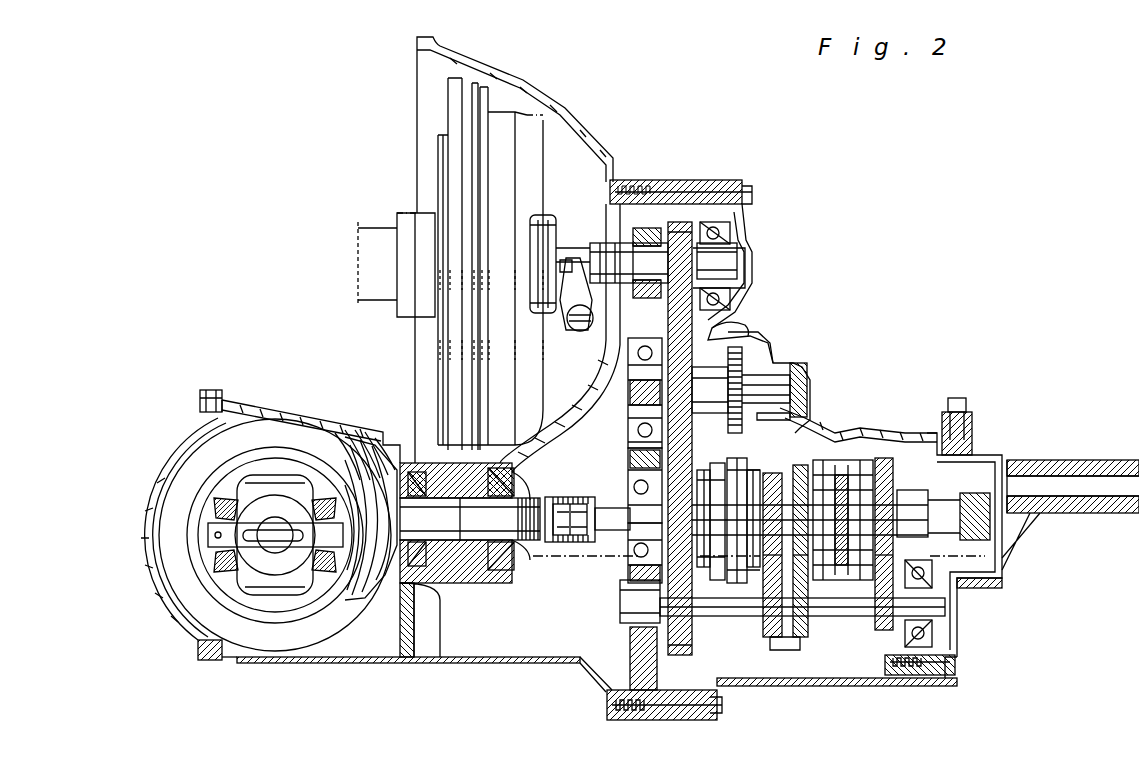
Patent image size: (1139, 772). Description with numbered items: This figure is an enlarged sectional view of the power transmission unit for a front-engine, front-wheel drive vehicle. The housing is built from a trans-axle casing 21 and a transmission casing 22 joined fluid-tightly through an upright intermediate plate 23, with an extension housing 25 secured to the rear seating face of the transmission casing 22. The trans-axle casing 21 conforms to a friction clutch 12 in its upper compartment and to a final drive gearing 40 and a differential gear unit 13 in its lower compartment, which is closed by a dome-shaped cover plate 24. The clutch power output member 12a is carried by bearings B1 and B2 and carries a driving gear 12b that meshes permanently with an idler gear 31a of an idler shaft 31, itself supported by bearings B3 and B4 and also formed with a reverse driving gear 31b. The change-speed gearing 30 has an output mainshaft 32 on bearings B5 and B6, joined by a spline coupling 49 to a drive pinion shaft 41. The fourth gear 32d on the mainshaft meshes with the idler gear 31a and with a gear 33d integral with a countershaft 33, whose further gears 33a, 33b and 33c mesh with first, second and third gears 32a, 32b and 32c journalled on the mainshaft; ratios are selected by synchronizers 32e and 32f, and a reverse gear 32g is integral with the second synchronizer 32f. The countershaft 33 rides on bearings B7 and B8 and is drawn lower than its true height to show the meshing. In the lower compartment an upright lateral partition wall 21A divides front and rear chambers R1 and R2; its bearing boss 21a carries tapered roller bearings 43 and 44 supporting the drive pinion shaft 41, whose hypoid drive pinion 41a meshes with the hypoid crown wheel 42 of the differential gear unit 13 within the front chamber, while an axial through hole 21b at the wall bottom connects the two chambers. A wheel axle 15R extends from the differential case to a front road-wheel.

The trans-axle casing 21 is at (478, 60).
The friction clutch 12 is at (455, 152).
The power output member 12a is at (717, 260).
The driving gear 12b is at (683, 227).
The bearing B1 is at (645, 184).
The bearing B2 is at (720, 236).
The idler shaft 31 is at (710, 377).
The idler gear 31a is at (687, 323).
The reverse driving gear 31b is at (742, 357).
The bearing B4 is at (800, 362).
The bearing B3 is at (636, 430).
The bearing B5 is at (632, 490).
The bearing B7 is at (627, 627).
The dome-shaped cover plate 24 is at (150, 505).
The differential gear unit 13 is at (233, 572).
The wheel axle 15R is at (275, 550).
The hypoid crown wheel 42 is at (362, 580).
The final drive gearing 40 is at (383, 438).
The hypoid drive pinion 41a is at (357, 437).
The tapered roller bearing 43 is at (428, 470).
The tapered roller bearing 44 is at (497, 462).
The drive pinion shaft 41 is at (497, 507).
The spline coupling 49 is at (567, 542).
The fourth gear 32d is at (714, 460).
The reverse gear 32g is at (733, 463).
The third gear 32c is at (767, 477).
The synchronizer 32f is at (725, 575).
The synchronizer 32e is at (845, 573).
The output mainshaft 32 is at (920, 503).
The first gear 32a is at (888, 460).
The second gear 32b is at (817, 457).
The change-speed gearing 30 is at (819, 432).
The countershaft 33 is at (957, 600).
The bearing B6 is at (932, 545).
The bearing B8 is at (940, 640).
The extension housing 25 is at (1060, 460).
The transmission casing 22 is at (868, 677).
The countershaft gear 33a is at (885, 657).
The countershaft gear 33b is at (803, 647).
The countershaft gear 33c is at (790, 648).
The countershaft gear 33d is at (687, 642).
The upright lateral partition wall 21A is at (442, 642).
The intermediate plate 23 is at (645, 717).
The bearing boss 21a is at (500, 575).
The axial through hole 21b is at (432, 617).
The front chamber R1 is at (363, 647).
The rear chamber R2 is at (532, 645).